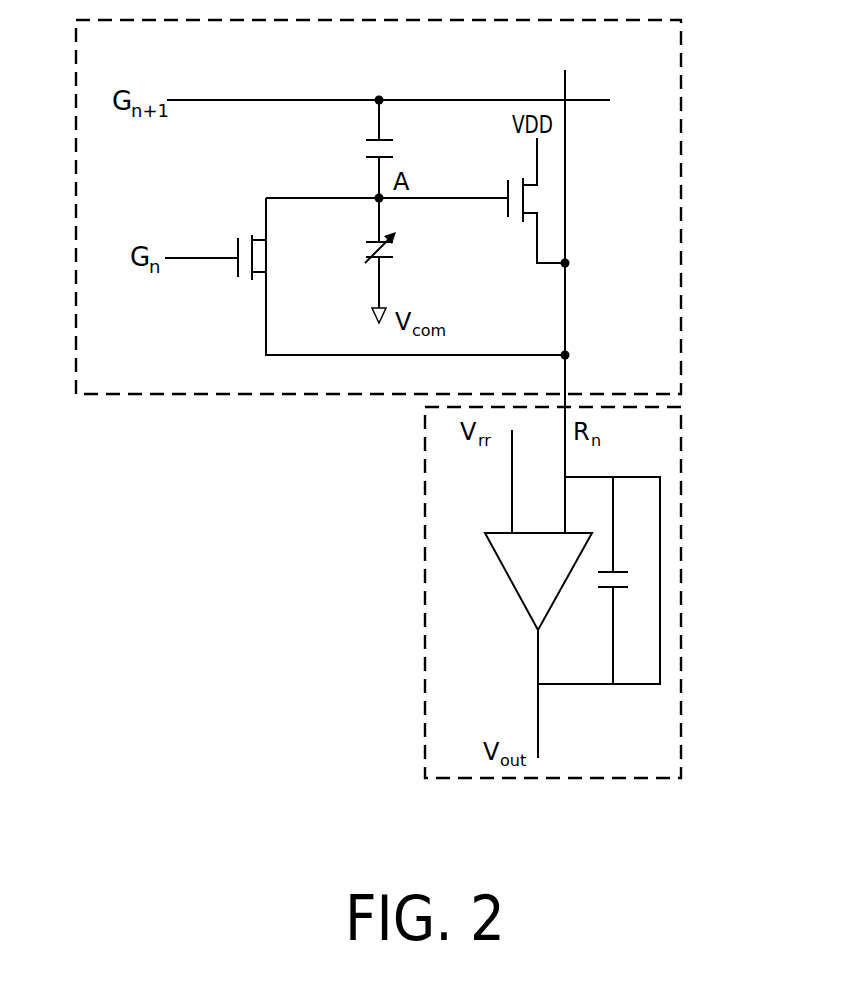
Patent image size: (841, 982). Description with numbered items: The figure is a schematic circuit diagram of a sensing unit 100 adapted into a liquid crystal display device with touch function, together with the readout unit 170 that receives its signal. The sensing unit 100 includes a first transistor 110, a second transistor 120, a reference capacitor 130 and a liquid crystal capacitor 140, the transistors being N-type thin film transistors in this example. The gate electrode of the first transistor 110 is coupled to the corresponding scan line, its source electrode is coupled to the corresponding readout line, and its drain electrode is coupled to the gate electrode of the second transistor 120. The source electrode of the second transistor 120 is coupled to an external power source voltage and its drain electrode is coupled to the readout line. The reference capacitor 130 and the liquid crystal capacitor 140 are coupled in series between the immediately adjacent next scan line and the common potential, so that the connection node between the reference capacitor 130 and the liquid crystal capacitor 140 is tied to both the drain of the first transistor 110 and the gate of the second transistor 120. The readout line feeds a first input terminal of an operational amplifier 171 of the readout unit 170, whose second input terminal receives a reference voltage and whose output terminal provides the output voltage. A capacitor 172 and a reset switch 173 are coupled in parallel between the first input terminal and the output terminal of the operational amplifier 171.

The sensing unit 100 is at (683, 190).
The first transistor 110 is at (238, 270).
The second transistor 120 is at (523, 192).
The reference capacitor 130 is at (389, 140).
The liquid crystal capacitor 140 is at (393, 258).
The readout unit 170 is at (683, 441).
The operational amplifier 171 is at (512, 584).
The capacitor 172 is at (605, 588).
The reset switch 173 is at (664, 576).